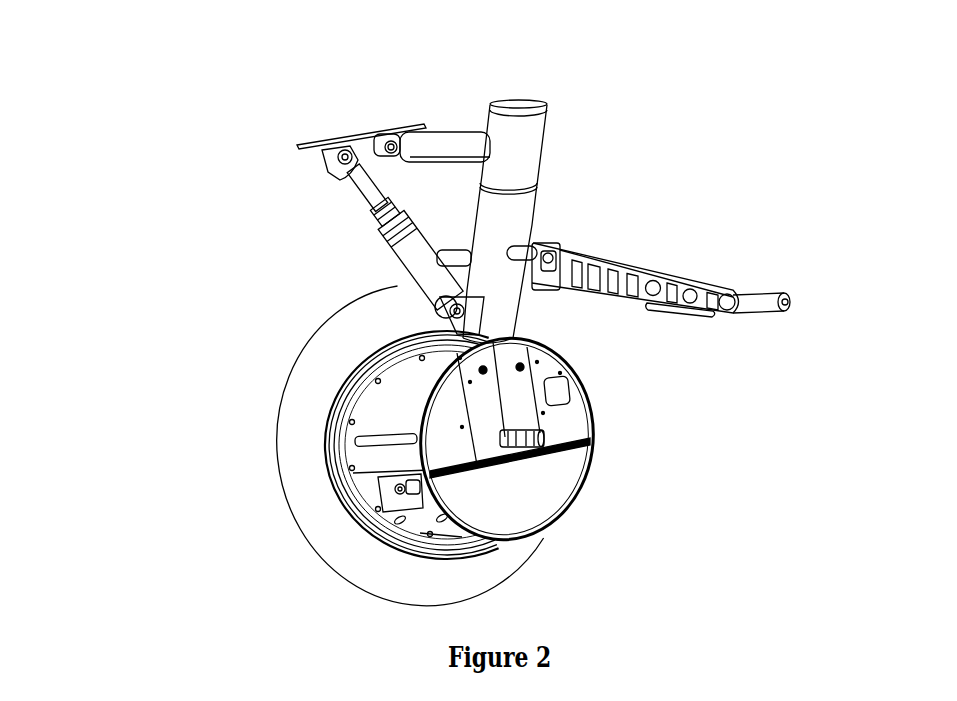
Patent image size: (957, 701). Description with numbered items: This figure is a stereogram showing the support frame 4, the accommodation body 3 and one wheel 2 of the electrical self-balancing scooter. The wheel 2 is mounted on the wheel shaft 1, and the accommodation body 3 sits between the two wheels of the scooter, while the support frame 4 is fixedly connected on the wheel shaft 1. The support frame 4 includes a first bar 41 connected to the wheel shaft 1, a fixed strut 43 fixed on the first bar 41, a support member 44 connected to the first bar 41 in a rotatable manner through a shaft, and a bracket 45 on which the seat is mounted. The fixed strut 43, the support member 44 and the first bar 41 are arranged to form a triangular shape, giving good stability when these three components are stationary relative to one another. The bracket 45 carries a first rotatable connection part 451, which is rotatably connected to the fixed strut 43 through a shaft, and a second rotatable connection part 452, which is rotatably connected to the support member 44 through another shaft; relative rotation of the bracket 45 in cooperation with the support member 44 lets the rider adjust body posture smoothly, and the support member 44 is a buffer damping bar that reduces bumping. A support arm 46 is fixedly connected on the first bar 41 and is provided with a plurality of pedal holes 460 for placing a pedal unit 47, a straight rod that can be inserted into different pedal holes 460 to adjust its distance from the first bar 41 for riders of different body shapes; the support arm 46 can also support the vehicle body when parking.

The wheel shaft 1 is at (543, 437).
The wheel 2 is at (310, 468).
The accommodation body 3 is at (640, 522).
The support frame 4 is at (520, 193).
The first bar 41 is at (523, 145).
The fixed strut 43 is at (435, 140).
The support member 44 is at (367, 228).
The bracket 45 is at (343, 137).
The first rotatable connection part 451 is at (392, 133).
The second rotatable connection part 452 is at (310, 143).
The support arm 46 is at (697, 370).
The pedal holes 460 is at (657, 282).
The pedal unit 47 is at (733, 302).